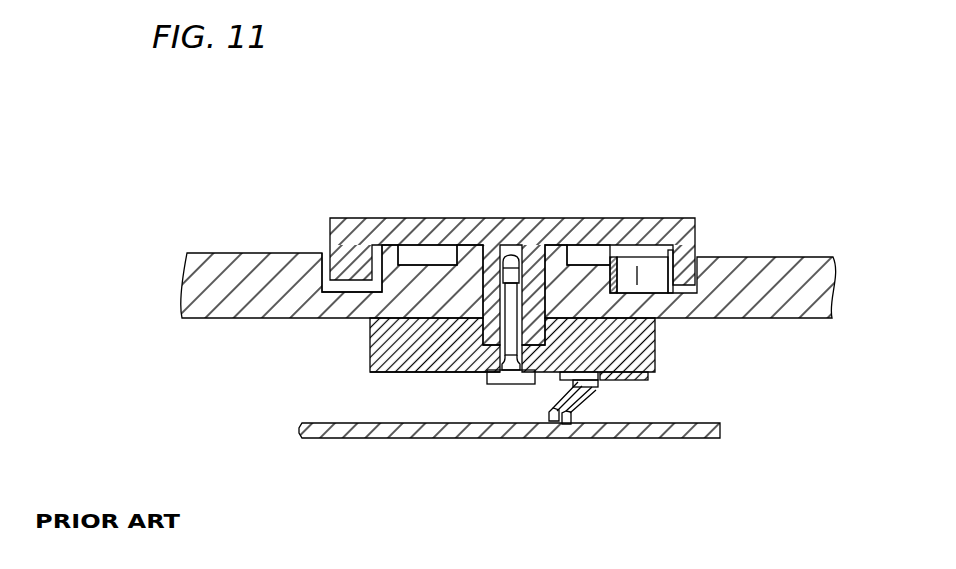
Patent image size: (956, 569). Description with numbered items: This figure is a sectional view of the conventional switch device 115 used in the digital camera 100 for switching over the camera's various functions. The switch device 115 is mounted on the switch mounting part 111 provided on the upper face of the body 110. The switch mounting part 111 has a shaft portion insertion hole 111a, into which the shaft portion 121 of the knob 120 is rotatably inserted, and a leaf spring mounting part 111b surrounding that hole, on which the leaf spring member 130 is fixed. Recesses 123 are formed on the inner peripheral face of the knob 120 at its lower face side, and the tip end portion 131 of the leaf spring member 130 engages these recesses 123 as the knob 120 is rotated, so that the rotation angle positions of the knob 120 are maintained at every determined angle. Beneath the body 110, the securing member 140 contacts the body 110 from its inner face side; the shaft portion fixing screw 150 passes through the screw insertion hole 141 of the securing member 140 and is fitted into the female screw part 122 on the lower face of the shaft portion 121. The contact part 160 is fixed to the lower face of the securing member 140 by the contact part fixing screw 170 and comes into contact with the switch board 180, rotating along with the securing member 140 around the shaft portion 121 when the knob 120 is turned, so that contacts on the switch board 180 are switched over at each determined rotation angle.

The digital camera 100 is at (815, 189).
The body 110 is at (226, 257).
The switch mounting part 111 is at (327, 250).
The shaft portion insertion hole 111a is at (458, 246).
The leaf spring mounting part 111b is at (586, 250).
The switch device 115 is at (601, 168).
The knob 120 is at (360, 216).
The shaft portion 121 is at (503, 258).
The female screw part 122 is at (513, 254).
The recesses 123 is at (670, 266).
The leaf spring member 130 is at (650, 274).
The tip end portion 131 is at (640, 265).
The securing member 140 is at (380, 322).
The screw insertion hole 141 is at (455, 375).
The shaft portion fixing screw 150 is at (495, 386).
The contact part 160 is at (562, 425).
The contact part fixing screw 170 is at (590, 384).
The switch board 180 is at (390, 438).